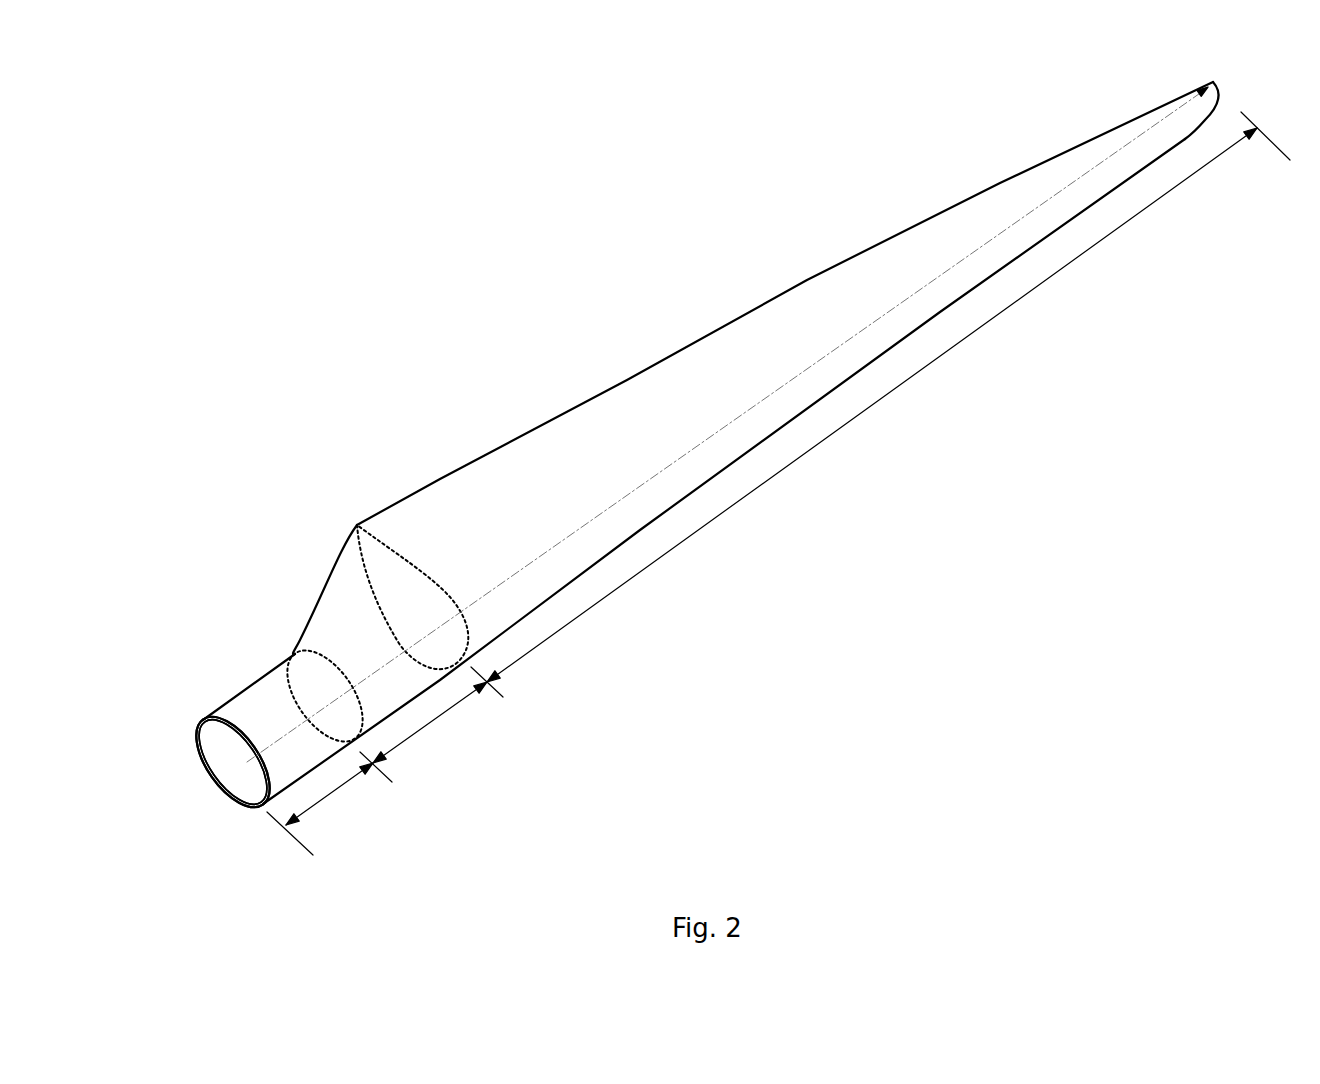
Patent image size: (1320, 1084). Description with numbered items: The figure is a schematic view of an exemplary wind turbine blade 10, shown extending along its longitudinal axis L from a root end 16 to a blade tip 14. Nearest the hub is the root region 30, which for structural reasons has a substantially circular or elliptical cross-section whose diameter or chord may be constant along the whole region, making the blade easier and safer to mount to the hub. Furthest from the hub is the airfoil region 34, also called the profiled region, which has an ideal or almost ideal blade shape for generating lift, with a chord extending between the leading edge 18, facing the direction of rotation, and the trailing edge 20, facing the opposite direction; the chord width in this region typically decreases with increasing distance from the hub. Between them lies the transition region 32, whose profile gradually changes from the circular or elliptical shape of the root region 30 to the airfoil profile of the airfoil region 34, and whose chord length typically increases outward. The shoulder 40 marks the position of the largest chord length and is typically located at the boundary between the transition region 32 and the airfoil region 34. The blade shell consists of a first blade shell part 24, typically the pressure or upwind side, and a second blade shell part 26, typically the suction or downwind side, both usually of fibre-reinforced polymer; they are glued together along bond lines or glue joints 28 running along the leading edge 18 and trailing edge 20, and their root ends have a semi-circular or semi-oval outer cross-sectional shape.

The wind turbine blade 10 is at (440, 277).
The blade tip 14 is at (1213, 82).
The root end 16 is at (246, 772).
The leading edge 18 is at (907, 335).
The trailing edge 20 is at (793, 293).
The first blade shell part 24 is at (208, 727).
The second blade shell part 26 is at (222, 785).
The bond lines/glue joints 28 is at (216, 736).
The root region 30 is at (333, 793).
The transition region 32 is at (433, 723).
The airfoil region 34 is at (793, 462).
The shoulder 40 is at (357, 525).
The longitudinal axis of wind turbine blade L is at (247, 762).